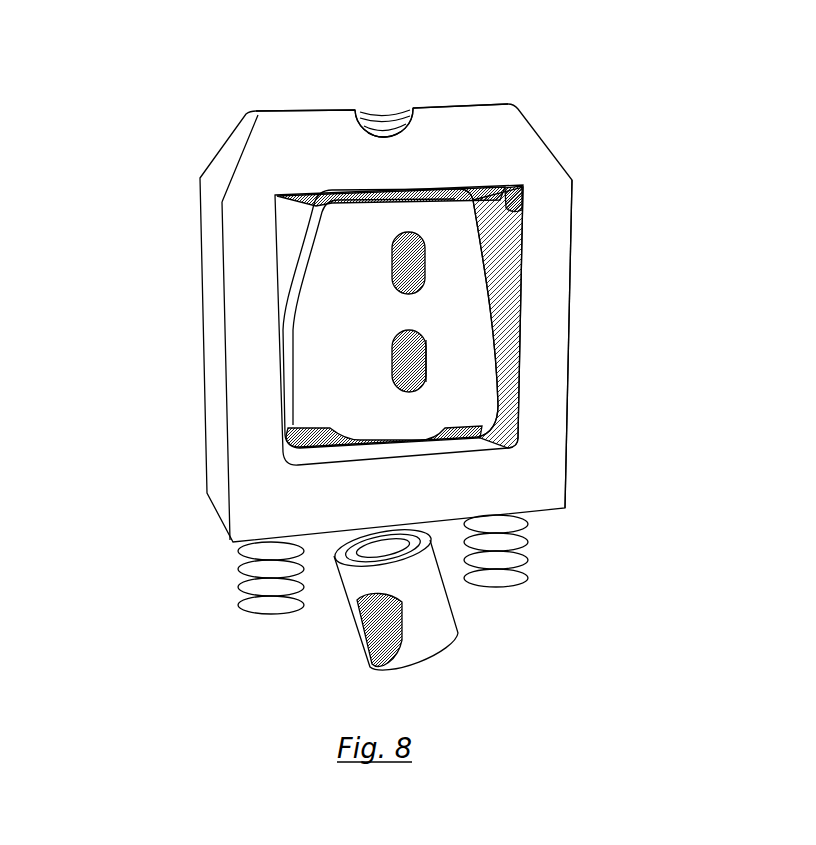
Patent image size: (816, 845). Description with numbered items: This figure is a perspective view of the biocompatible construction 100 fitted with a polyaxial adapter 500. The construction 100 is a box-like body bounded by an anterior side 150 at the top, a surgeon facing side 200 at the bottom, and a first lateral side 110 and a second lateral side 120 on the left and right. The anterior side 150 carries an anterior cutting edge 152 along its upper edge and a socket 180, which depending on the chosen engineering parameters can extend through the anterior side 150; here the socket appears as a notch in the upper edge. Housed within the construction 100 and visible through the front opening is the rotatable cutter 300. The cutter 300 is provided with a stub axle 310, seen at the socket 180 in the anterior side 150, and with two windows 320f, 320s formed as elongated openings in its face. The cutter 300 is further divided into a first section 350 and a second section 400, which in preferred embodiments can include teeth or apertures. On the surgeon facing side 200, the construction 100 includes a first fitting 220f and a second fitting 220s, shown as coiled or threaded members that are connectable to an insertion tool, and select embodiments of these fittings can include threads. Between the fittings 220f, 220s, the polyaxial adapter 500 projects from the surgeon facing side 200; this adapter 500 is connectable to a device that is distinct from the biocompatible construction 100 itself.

The biocompatible construction 100 is at (462, 316).
The first lateral side 110 is at (141, 327).
The second lateral side 120 is at (644, 344).
The anterior side 150 is at (261, 85).
The anterior cutting edge 152 is at (506, 86).
The socket 180 is at (448, 64).
The stub axle 310 is at (333, 83).
The first section 350 is at (274, 348).
The rotatable cutter 300 is at (456, 317).
The window 320s is at (525, 247).
The window 320f is at (520, 401).
The second section 400 is at (530, 362).
The surgeon facing side 200 is at (389, 613).
The first fitting 220f is at (200, 581).
The second fitting 220s is at (573, 555).
The polyaxial adapter 500 is at (315, 610).